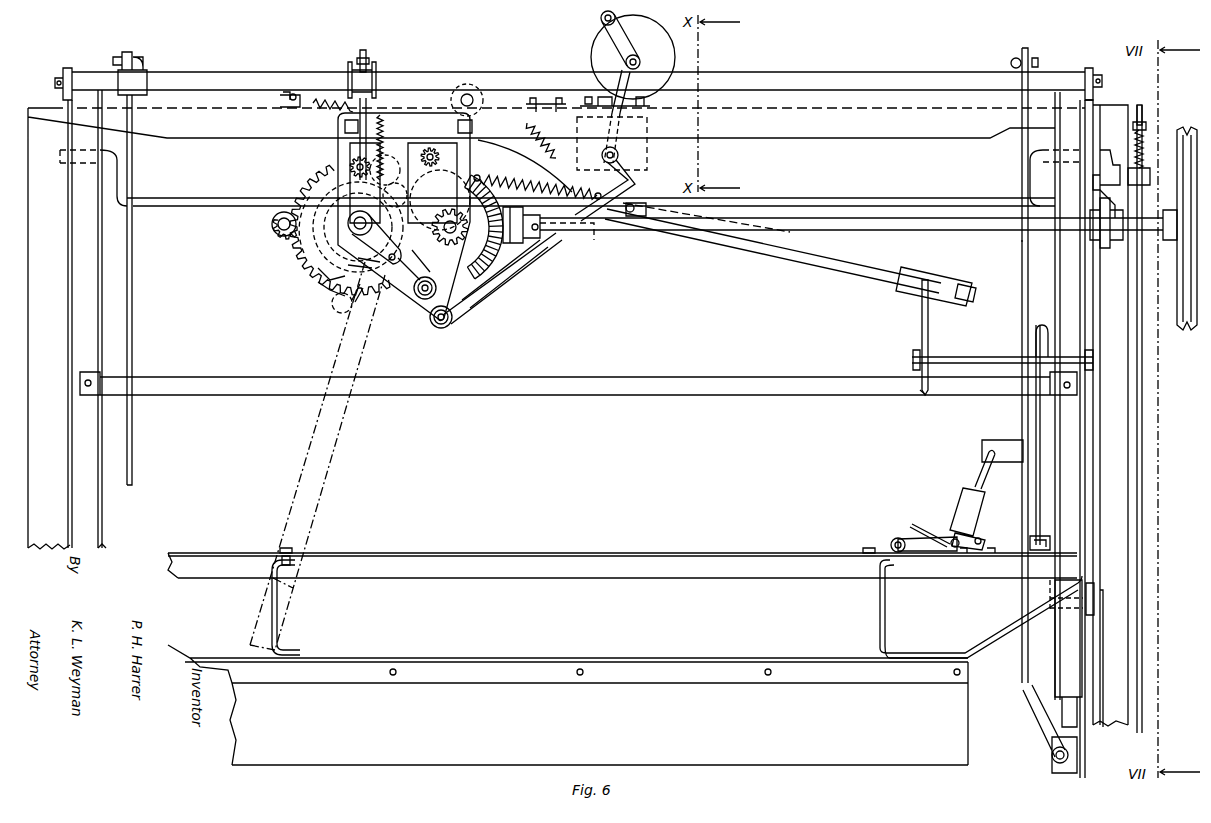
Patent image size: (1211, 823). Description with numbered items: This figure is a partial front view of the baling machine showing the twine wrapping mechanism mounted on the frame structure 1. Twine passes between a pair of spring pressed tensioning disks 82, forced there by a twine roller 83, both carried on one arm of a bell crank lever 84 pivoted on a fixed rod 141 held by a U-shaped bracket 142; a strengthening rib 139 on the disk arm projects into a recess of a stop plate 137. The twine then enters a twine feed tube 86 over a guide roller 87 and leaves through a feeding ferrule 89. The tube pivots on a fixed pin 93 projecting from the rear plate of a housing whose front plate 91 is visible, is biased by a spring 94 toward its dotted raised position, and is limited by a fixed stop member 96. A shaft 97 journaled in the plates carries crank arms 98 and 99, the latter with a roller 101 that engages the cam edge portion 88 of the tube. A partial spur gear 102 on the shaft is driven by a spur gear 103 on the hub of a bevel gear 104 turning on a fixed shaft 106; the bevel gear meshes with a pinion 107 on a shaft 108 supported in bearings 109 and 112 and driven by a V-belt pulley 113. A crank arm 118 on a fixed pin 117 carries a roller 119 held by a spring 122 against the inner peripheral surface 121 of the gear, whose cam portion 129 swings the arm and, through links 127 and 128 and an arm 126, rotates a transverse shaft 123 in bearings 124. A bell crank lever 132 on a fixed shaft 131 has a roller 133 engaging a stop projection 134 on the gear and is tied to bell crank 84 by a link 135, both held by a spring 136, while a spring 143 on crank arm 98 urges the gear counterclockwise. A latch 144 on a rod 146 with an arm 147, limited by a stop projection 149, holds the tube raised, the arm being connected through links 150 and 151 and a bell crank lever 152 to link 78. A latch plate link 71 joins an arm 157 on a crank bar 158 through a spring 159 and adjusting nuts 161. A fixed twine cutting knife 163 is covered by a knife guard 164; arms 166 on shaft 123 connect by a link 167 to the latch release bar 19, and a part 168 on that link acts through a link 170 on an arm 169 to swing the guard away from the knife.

The frame structure 1 is at (96, 300).
The latch release bar 19 is at (1052, 757).
The latch plate link 71 is at (1138, 315).
The link 78 is at (1104, 672).
The twine tensioning disks 82 is at (592, 53).
The twine roller 83 is at (602, 20).
The bell crank lever 84 is at (626, 62).
The twine feed tube 86 is at (790, 252).
The twine guide roller 87 is at (450, 101).
The cam edge portion 88 is at (353, 306).
The twine feeding ferrule 89 is at (966, 302).
The front plate 91 is at (344, 126).
The fixed pin 93 is at (473, 126).
The spring 94 is at (318, 110).
The fixed stop member 96 is at (336, 378).
The shaft 97 is at (347, 220).
The crank arm 98 is at (360, 245).
The crank arm 99 is at (290, 240).
The roller 101 is at (272, 224).
The spur gear 102 is at (306, 182).
The spur gear 103 is at (440, 200).
The bevel gear 104 is at (490, 280).
The fixed shaft 106 is at (448, 248).
The pinion 107 is at (494, 245).
The shaft 108 is at (662, 226).
The bearing 109 is at (533, 248).
The bearing 112 is at (1118, 242).
The V-belt pulley 113 is at (1190, 330).
The fixed pin 117 is at (436, 160).
The crank arm 118 is at (385, 176).
The roller 119 is at (340, 200).
The inner peripheral surface 121 is at (340, 214).
The spring 122 is at (383, 116).
The transverse shaft 123 is at (540, 76).
The bearings 124 is at (66, 72).
The arm 126 is at (350, 70).
The link 127 is at (367, 58).
The link 128 is at (350, 160).
The cam portion 129 is at (302, 262).
The fixed shaft 131 is at (437, 288).
The bell crank lever 132 is at (434, 316).
The roller 133 is at (364, 257).
The stop projection 134 is at (320, 284).
The link 135 is at (466, 300).
The spring 136 is at (510, 152).
The stop plate 137 is at (645, 114).
The strengthening rib 139 is at (647, 102).
The fixed rod 141 is at (619, 154).
The U-shaped bracket 142 is at (640, 170).
The spring 143 is at (393, 198).
The latch 144 is at (922, 322).
The rod 146 is at (966, 357).
The arm 147 is at (1038, 326).
The stop projection 149 is at (922, 392).
The link 150 is at (1036, 478).
The link 151 is at (1030, 538).
The bell crank lever 152 is at (1090, 582).
The arm 157 is at (1112, 152).
The crank bar 158 is at (965, 200).
The spring 159 is at (1148, 140).
The spring position adjusting nuts 161 is at (1148, 126).
The twine cutting knife 163 is at (916, 521).
The knife guard 164 is at (895, 540).
The arms 166 is at (148, 72).
The link 167 is at (1020, 242).
The part 168 is at (1010, 442).
The arm 169 is at (962, 498).
The link 170 is at (982, 470).